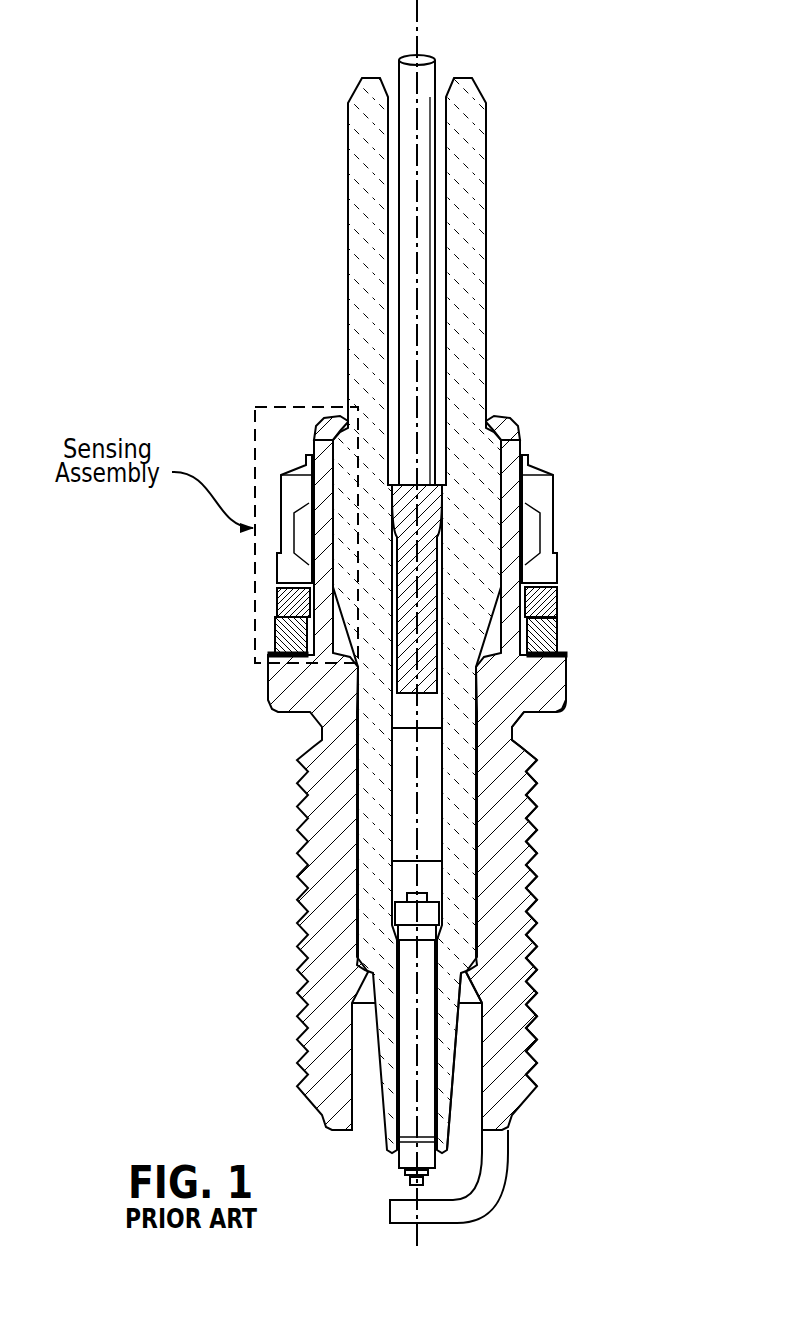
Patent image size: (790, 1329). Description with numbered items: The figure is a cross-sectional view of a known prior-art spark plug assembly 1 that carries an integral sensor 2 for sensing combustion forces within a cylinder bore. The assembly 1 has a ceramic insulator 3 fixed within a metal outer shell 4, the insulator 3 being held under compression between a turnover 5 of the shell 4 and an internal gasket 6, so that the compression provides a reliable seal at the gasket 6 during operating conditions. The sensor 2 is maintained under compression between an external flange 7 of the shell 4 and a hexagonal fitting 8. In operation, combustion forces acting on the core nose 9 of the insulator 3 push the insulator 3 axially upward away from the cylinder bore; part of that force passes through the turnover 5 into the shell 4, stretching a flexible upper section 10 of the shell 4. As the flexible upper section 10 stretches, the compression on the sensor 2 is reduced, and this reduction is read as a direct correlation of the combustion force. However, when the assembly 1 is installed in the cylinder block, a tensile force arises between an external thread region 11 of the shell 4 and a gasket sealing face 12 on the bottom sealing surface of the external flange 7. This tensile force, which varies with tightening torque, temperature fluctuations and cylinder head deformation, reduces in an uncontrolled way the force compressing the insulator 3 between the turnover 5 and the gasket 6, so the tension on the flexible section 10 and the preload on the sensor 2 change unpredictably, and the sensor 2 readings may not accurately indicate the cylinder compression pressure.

The spark plug assembly 1 is at (517, 127).
The sensor 2 is at (568, 639).
The ceramic insulator 3 is at (347, 262).
The metal outer shell 4 is at (300, 957).
The turnover 5 is at (508, 415).
The internal gasket 6 is at (472, 973).
The external flange 7 is at (565, 678).
The hexagonal fitting 8 is at (553, 528).
The core nose 9 is at (455, 1076).
The flexible upper section 10 is at (637, 427).
The external thread region 11 is at (540, 832).
The gasket sealing face 12 is at (540, 716).